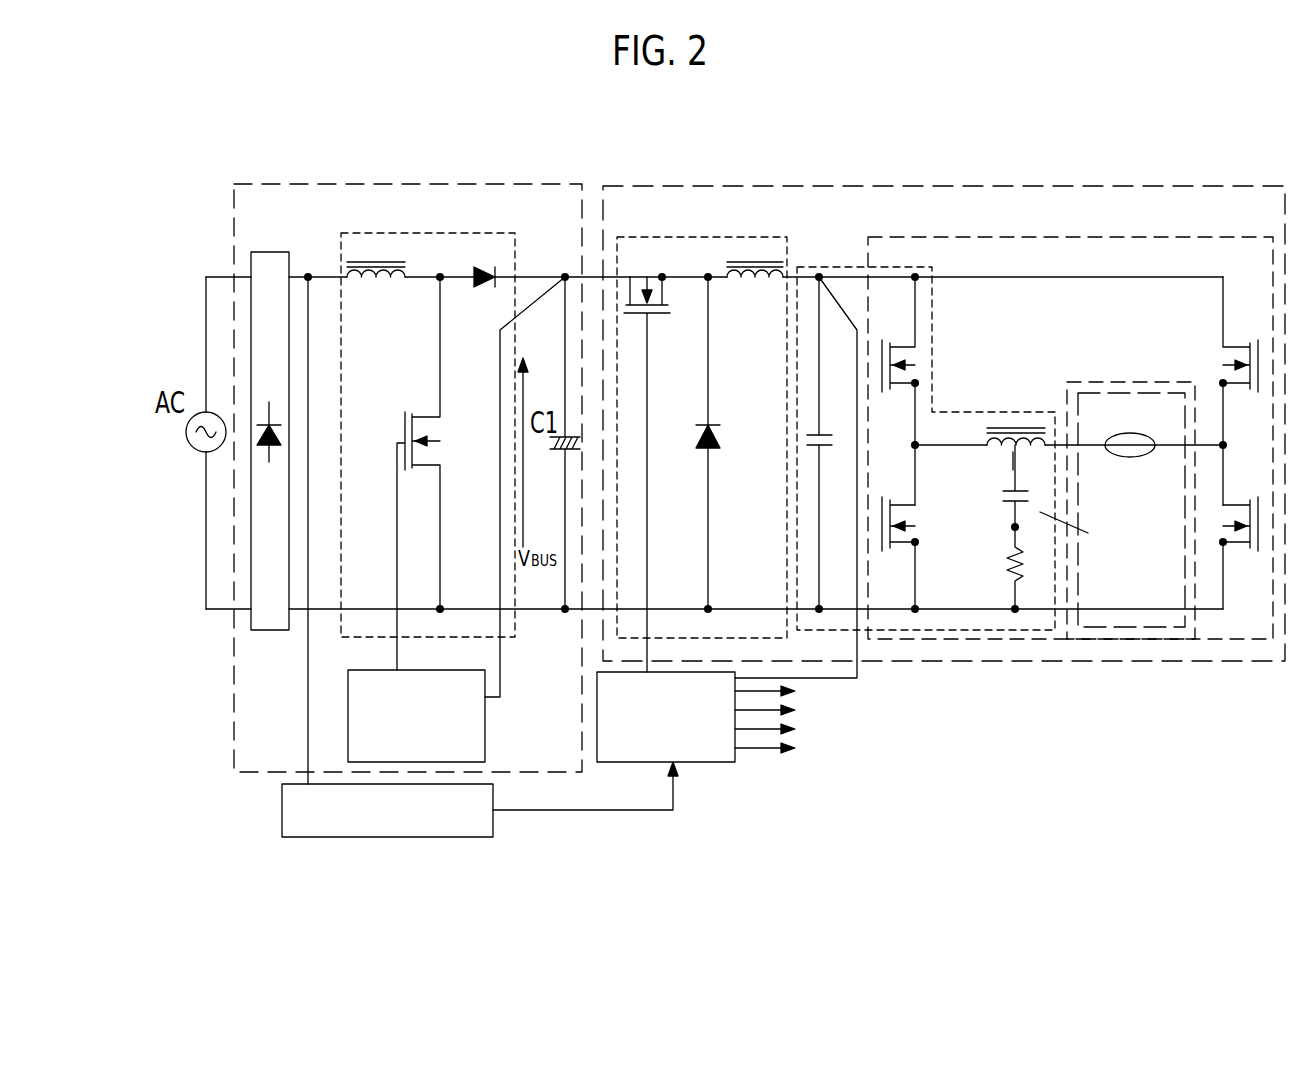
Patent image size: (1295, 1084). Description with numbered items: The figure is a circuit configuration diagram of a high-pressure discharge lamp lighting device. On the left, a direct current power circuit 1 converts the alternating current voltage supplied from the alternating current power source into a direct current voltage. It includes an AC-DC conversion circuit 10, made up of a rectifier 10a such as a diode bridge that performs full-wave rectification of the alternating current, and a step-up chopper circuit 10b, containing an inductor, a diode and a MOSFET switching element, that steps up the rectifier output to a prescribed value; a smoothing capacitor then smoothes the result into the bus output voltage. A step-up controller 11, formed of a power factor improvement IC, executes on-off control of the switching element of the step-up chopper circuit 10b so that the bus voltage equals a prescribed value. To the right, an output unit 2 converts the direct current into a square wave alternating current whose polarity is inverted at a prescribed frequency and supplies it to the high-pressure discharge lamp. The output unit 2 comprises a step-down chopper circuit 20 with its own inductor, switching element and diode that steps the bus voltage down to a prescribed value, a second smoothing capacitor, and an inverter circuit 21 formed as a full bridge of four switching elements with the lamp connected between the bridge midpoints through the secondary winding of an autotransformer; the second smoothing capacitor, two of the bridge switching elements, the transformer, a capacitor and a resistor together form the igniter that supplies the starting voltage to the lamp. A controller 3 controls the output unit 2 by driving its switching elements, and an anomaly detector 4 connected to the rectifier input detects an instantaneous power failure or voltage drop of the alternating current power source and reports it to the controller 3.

The direct current power circuit 1 is at (448, 184).
The output unit 2 is at (928, 186).
The controller 3 is at (706, 764).
The anomaly detector 4 is at (325, 841).
The AC-DC conversion circuit 10 is at (378, 366).
The rectifier 10a is at (269, 260).
The step-up chopper circuit 10b is at (364, 233).
The step-up controller 11 is at (347, 698).
The step-down chopper circuit 20 is at (667, 237).
The inverter circuit 21 is at (1058, 237).